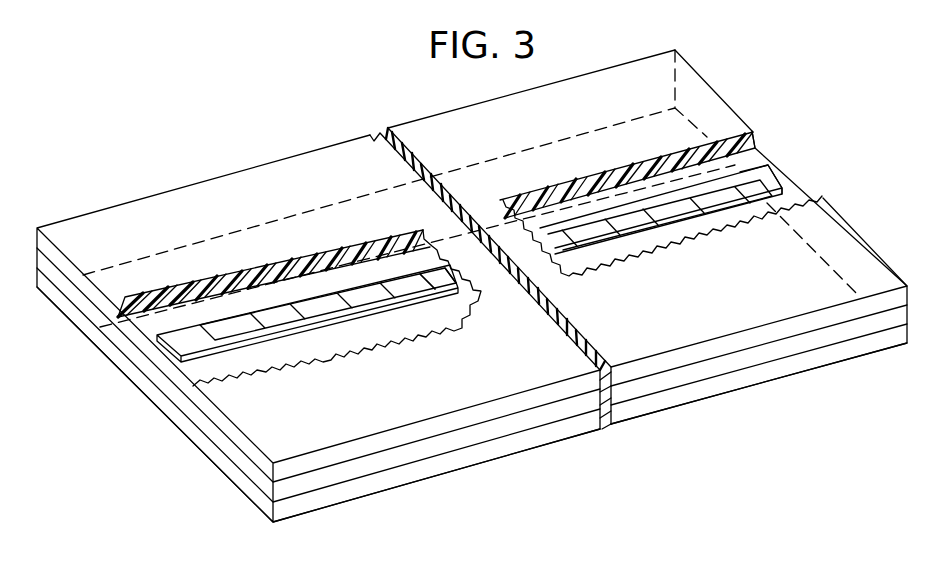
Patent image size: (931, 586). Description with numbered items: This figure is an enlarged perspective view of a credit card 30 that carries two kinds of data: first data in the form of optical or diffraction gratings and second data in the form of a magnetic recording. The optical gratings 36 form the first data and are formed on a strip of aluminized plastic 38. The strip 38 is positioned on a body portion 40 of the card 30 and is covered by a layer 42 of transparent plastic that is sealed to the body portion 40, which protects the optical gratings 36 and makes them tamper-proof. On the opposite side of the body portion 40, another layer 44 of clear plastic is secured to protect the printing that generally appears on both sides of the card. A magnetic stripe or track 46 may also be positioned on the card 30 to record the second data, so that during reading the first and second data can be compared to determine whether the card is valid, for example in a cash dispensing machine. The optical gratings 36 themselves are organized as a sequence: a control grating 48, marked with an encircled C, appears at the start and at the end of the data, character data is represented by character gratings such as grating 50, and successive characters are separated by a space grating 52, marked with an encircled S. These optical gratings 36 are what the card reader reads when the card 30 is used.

The credit card 30 is at (325, 140).
The optical gratings 36 is at (597, 230).
The strip of aluminized plastic 38 is at (760, 180).
The body portion 40 is at (173, 387).
The layer of transparent plastic 42 is at (222, 424).
The layer of clear plastic 44 is at (254, 492).
The magnetic stripe or track 46 is at (113, 332).
The control grating 48 is at (250, 327).
The character grating 50 is at (290, 316).
The space grating 52 is at (418, 278).